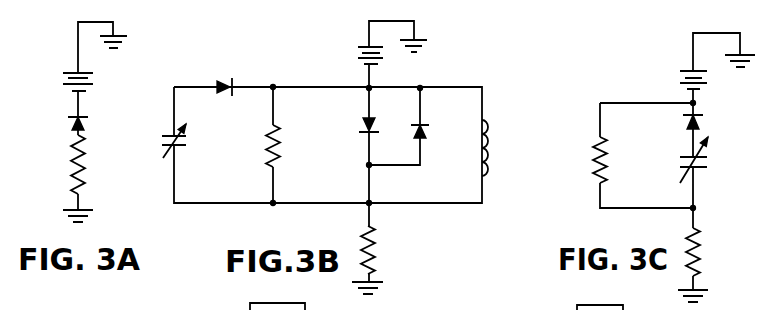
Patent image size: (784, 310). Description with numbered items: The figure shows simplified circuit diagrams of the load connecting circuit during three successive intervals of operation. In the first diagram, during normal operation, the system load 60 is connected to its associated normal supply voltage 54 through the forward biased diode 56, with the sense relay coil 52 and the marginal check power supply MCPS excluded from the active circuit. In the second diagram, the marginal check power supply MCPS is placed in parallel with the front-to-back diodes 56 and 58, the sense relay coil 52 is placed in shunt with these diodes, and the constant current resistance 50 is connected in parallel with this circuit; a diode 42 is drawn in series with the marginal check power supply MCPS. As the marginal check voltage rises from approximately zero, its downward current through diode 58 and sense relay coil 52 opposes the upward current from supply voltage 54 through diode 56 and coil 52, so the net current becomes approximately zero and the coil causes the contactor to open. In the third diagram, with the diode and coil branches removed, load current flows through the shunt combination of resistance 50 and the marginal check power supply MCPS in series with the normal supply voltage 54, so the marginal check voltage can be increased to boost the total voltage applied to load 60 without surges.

In FIG. 3B, the diode 42 is at (222, 84).
In FIG. 3C, the diode 42 is at (683, 126).
In FIG. 3B, the constant current resistance 50 is at (268, 161).
In FIG. 3C, the constant current resistance 50 is at (595, 143).
In FIG. 3B, the sense relay coil 52 is at (478, 168).
In FIG. 3A, the normal supply voltage 54 is at (93, 73).
In FIG. 3B, the normal supply voltage 54 is at (358, 47).
In FIG. 3C, the normal supply voltage 54 is at (680, 71).
In FIG. 3A, the diode 56 is at (88, 117).
In FIG. 3B, the diode 56 is at (428, 124).
In FIG. 3B, the diode 58 is at (359, 125).
In FIG. 3A, the system load 60 is at (85, 171).
In FIG. 3B, the system load 60 is at (378, 240).
In FIG. 3C, the system load 60 is at (705, 240).
In FIG. 3B, the marginal check power supply MCPS is at (188, 126).
In FIG. 3C, the marginal check power supply MCPS is at (683, 168).